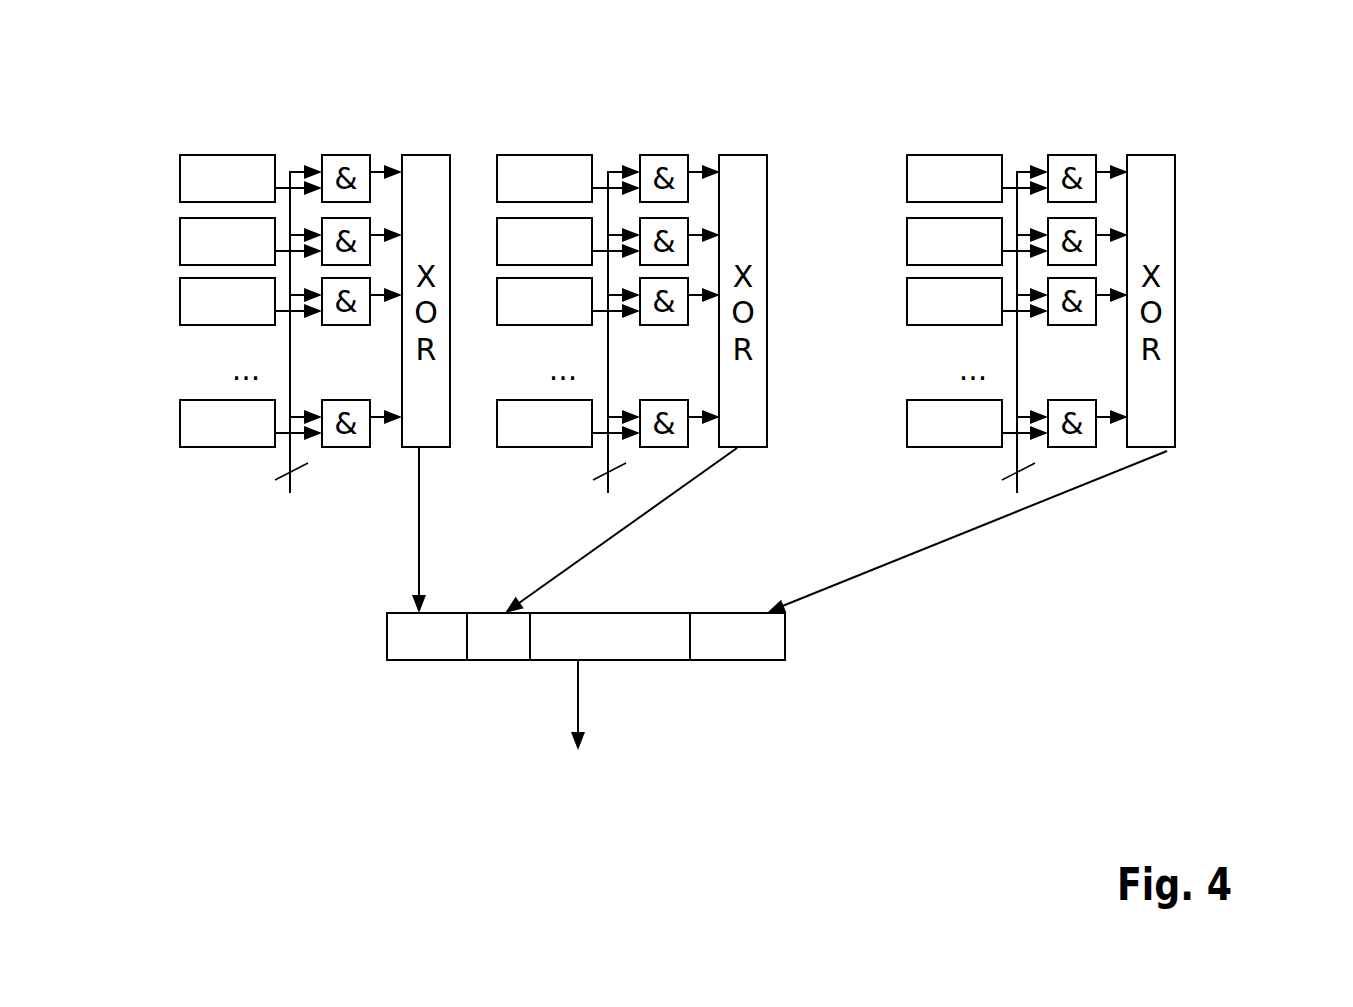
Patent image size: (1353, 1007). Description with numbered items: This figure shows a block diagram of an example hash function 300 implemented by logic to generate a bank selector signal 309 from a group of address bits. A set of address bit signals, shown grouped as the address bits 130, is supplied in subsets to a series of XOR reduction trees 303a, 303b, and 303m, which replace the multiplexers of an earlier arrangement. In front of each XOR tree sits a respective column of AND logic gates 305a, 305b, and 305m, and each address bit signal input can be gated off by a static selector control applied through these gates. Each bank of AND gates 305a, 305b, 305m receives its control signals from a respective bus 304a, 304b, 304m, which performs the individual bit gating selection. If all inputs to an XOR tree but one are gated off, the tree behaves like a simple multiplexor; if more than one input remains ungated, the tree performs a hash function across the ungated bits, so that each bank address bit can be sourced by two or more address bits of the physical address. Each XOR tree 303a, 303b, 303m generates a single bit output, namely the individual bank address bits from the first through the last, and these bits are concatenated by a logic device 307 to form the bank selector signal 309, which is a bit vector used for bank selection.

The hash function 300 is at (1088, 38).
The address bits register 130 is at (165, 487).
The XOR reduction tree 303a is at (438, 163).
The XOR reduction tree 303b is at (718, 158).
The XOR reduction tree 303m is at (1127, 173).
The bus 304a is at (318, 497).
The bus 304b is at (592, 478).
The bus 304m is at (1000, 480).
The column of AND logic gates 305a is at (318, 160).
The column of AND logic gates 305b is at (642, 157).
The column of AND logic gates 305m is at (1045, 145).
The logic device 307 is at (378, 622).
The bank selector signal 309 is at (563, 682).